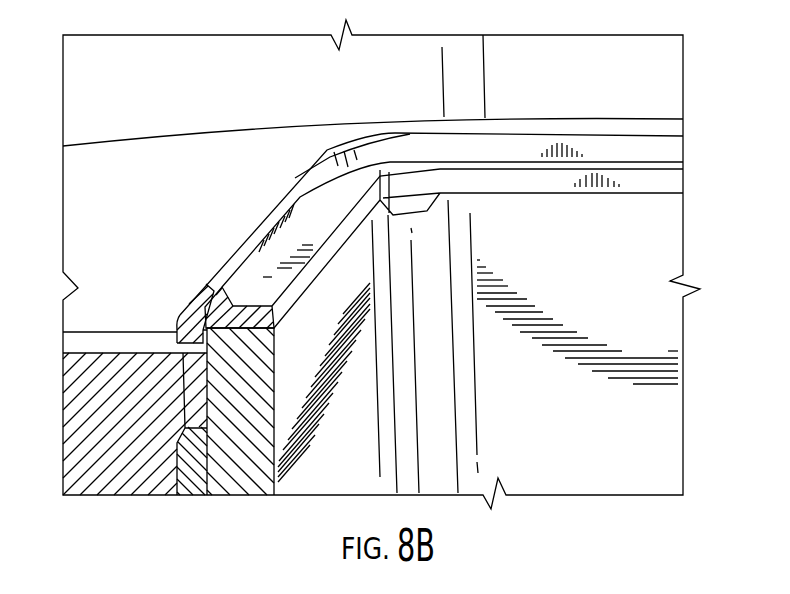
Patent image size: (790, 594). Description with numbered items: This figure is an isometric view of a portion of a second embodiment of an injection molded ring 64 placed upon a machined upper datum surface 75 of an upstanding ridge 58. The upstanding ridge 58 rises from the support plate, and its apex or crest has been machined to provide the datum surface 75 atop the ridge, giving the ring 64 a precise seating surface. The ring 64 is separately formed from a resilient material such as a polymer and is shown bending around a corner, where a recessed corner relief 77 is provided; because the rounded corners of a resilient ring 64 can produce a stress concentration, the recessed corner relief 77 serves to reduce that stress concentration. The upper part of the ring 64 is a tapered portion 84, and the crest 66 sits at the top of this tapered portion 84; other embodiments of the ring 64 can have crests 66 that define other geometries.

The upstanding ridge 58 is at (268, 487).
The ring 64 is at (668, 167).
The crest 66 is at (233, 271).
The datum surface 75 is at (220, 326).
The recessed corner relief 77 is at (403, 205).
The tapered portion 84 is at (260, 263).